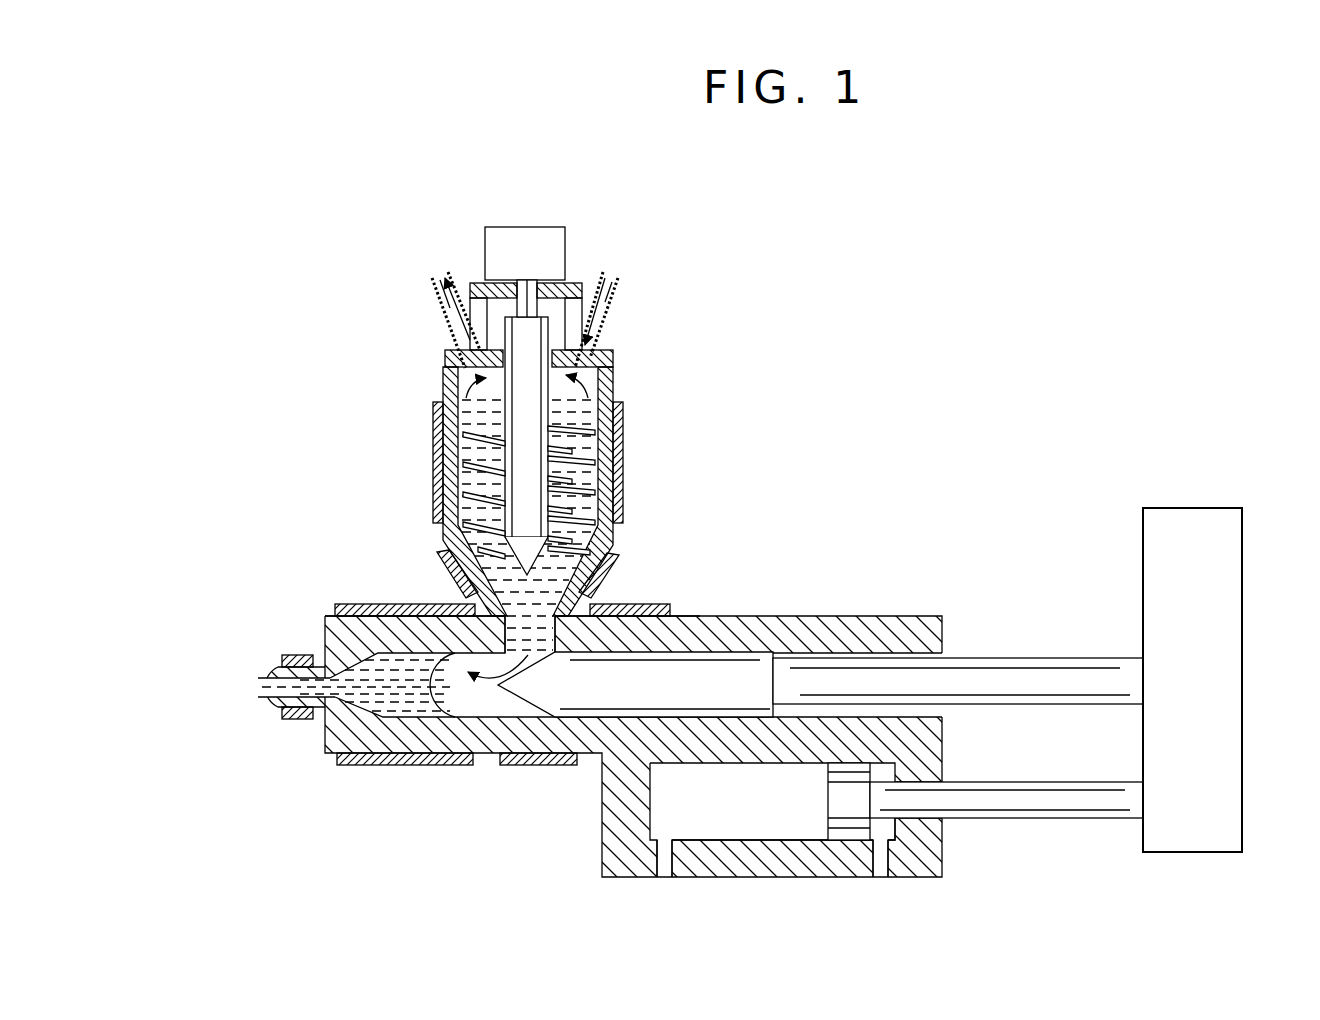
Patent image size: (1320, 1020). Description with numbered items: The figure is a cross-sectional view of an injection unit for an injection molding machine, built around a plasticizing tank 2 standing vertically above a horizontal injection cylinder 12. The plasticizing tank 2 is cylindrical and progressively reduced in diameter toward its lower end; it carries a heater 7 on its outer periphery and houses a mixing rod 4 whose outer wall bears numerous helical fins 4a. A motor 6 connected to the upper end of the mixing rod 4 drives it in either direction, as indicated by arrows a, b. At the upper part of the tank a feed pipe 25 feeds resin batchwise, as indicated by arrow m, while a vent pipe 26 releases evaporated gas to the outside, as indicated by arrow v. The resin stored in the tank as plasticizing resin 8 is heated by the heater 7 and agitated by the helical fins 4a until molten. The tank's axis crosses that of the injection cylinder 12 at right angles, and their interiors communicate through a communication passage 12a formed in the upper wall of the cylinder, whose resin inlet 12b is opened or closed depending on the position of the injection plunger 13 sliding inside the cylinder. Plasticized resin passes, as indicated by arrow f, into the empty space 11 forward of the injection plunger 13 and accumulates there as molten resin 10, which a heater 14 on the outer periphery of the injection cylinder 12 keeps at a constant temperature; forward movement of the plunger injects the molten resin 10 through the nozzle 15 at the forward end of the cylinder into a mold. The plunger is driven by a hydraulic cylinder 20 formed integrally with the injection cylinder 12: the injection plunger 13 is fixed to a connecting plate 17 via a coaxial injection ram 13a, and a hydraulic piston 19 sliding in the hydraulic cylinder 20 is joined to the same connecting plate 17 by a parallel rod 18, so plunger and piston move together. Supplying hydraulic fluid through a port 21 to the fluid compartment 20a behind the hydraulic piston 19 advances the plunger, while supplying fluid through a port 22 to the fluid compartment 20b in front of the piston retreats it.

The plasticizing tank 2 is at (615, 458).
The mixing rod 4 is at (537, 385).
The helical fins 4a is at (577, 507).
The motor 6 is at (527, 228).
The heater 7 is at (433, 458).
The plasticizing resin 8 is at (470, 508).
The molten resin 10 is at (393, 697).
The empty space 11 is at (485, 707).
The injection cylinder 12 is at (436, 740).
The communication passage 12a is at (415, 630).
The resin inlet 12b is at (588, 613).
The injection plunger 13 is at (745, 668).
The injection ram 13a is at (1058, 673).
The heater 14 is at (357, 605).
The nozzle 15 is at (273, 675).
The connecting plate 17 is at (1222, 570).
The rod 18 is at (1050, 797).
The hydraulic piston 19 is at (857, 830).
The hydraulic cylinder 20 is at (788, 847).
The fluid compartment 20a is at (887, 827).
The fluid compartment 20b is at (695, 835).
The port 21 is at (883, 855).
The port 22 is at (664, 870).
The feed pipe 25 is at (603, 312).
The vent pipe 26 is at (445, 333).
The arrow a is at (588, 396).
The arrow b is at (466, 396).
The arrow f is at (485, 678).
The arrow m is at (613, 266).
The arrow v is at (438, 298).